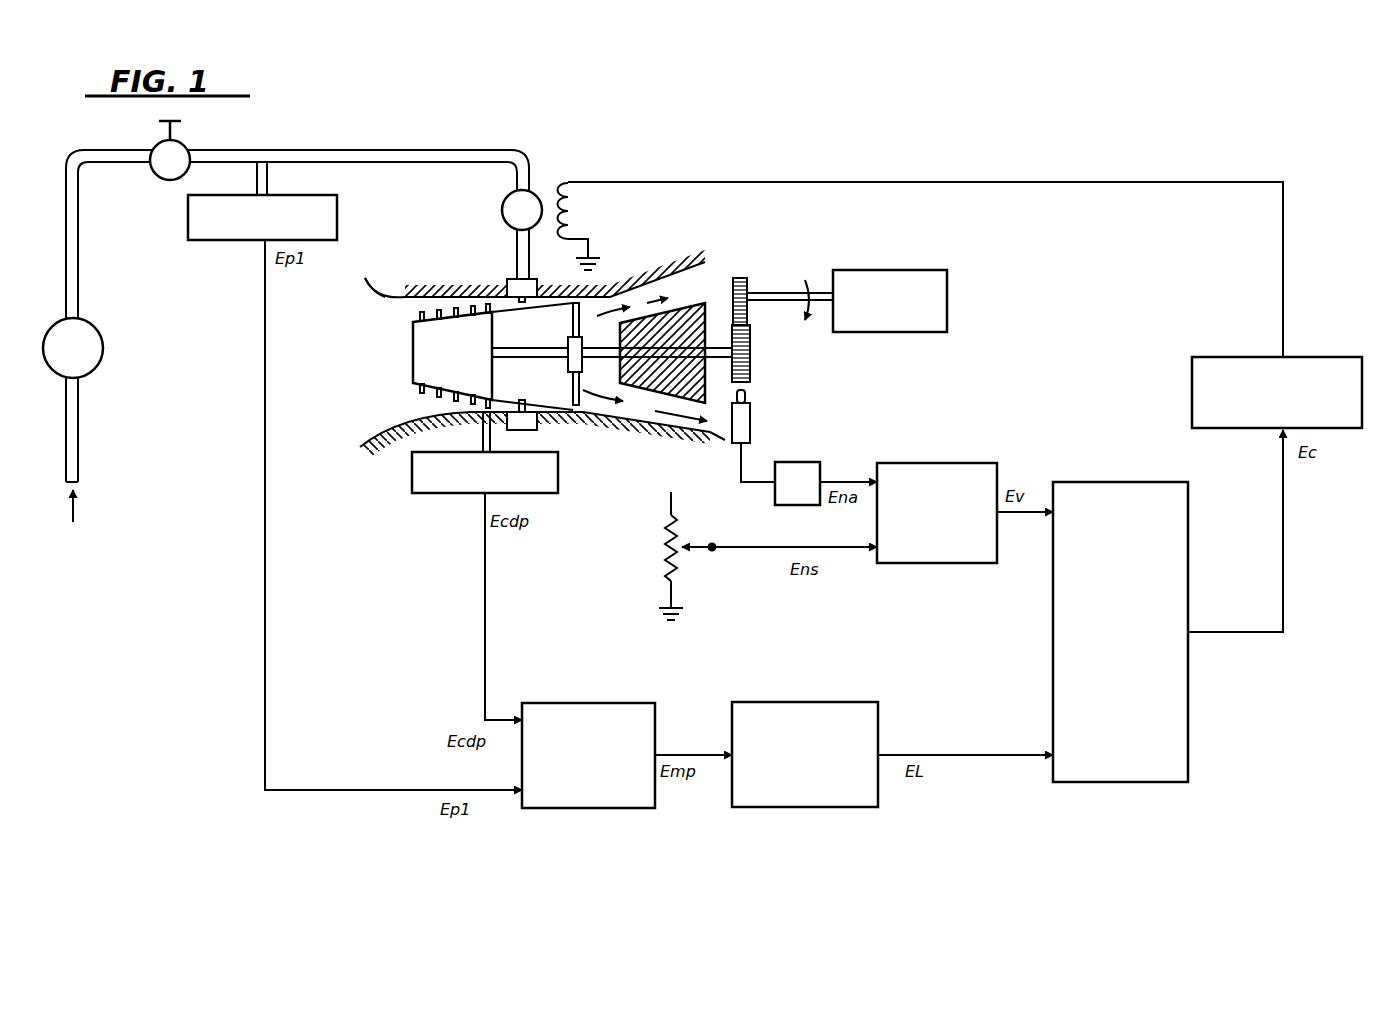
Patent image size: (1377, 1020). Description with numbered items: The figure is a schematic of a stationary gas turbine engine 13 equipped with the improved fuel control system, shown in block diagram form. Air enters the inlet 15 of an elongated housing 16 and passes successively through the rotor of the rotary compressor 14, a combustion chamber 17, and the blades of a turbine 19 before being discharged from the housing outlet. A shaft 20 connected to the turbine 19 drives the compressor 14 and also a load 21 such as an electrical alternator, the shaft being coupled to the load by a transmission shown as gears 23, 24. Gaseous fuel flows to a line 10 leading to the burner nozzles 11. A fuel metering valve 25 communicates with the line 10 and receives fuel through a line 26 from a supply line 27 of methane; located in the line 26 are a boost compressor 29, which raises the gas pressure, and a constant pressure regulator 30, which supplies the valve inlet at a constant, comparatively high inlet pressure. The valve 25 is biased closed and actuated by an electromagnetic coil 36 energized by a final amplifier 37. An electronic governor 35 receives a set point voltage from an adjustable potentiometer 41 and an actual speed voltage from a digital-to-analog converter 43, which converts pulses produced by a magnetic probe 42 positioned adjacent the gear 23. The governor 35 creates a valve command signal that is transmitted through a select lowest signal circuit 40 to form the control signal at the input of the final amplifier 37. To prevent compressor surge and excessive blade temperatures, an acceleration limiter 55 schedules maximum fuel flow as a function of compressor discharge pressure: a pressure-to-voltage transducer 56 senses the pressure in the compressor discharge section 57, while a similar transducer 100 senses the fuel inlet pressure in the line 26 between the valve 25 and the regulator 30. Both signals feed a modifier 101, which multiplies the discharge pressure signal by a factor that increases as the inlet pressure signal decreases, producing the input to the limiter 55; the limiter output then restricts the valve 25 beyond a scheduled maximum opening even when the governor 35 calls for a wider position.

The line 10 is at (517, 252).
The burner nozzles 11 is at (541, 292).
The gas turbine engine 13 is at (614, 290).
The rotary compressor 14 is at (413, 354).
The inlet 15 is at (378, 441).
The elongated housing 16 is at (375, 284).
The combustion chamber 17 is at (550, 319).
The turbine 19 is at (582, 412).
The shaft 20 is at (630, 372).
The load 21 is at (934, 274).
The gear 23 is at (750, 369).
The gear 24 is at (745, 290).
The fuel metering valve 25 is at (502, 211).
The line 26 is at (414, 150).
The supply line 27 is at (82, 432).
The boost compressor 29 is at (97, 334).
The constant pressure regulator 30 is at (160, 181).
The governor 35 is at (951, 463).
The electromagnetic coil 36 is at (572, 209).
The final amplifier 37 is at (1340, 358).
The select lowest signal circuit 40 is at (1068, 785).
The adjustable potentiometer 41 is at (664, 564).
The magnetic probe 42 is at (748, 426).
The digital-to-analog converter 43 is at (797, 462).
The acceleration limiter 55 is at (816, 702).
The pressure-to-voltage transducer 56 is at (558, 473).
The compressor discharge section 57 is at (480, 428).
The pressure-to-voltage transducer 100 is at (337, 208).
The modifier 101 is at (558, 808).